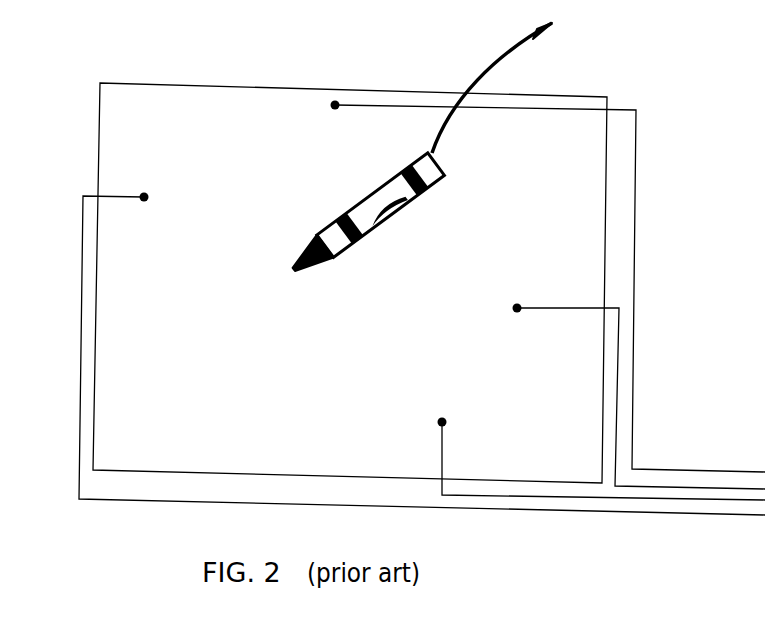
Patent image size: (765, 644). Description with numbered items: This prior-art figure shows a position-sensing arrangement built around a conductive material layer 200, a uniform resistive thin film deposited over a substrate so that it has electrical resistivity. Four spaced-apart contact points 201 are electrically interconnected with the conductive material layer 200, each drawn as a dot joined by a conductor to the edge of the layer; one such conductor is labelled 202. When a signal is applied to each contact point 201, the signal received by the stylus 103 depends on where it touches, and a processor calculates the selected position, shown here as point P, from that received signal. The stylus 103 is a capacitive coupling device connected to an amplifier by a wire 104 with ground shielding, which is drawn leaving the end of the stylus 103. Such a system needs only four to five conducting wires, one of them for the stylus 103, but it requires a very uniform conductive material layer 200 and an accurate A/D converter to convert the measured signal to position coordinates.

The conductive material layer 200 is at (212, 382).
The contact points 201 is at (380, 48).
The sensing line / conductor 202 is at (550, 251).
The stylus 103 is at (358, 202).
The wire 104 is at (493, 63).